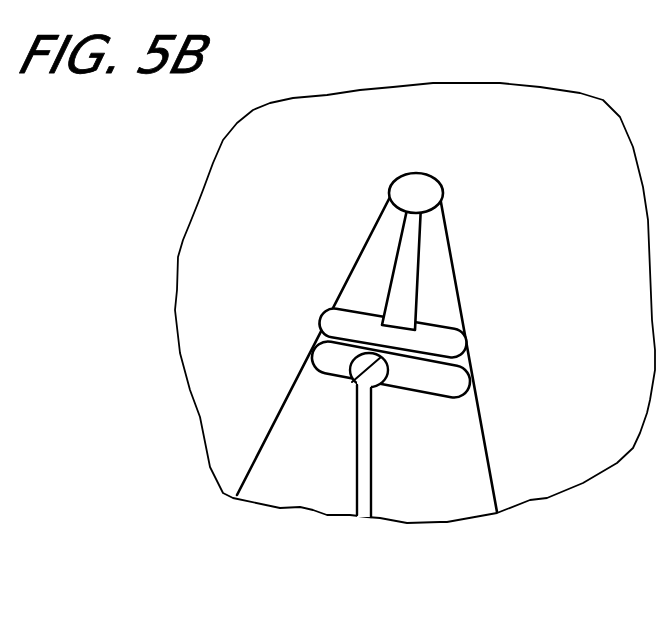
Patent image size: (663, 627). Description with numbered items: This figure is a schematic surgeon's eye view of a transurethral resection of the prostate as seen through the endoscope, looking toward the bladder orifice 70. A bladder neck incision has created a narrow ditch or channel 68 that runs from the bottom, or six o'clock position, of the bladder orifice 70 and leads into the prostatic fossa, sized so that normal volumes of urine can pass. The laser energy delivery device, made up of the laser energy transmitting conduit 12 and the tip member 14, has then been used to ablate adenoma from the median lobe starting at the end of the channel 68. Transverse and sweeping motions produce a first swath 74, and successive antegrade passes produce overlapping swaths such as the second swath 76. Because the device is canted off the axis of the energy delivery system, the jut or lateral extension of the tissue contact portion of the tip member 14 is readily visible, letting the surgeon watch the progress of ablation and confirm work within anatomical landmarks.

The laser energy transmitting conduit 12 is at (360, 498).
The tip member 14 is at (358, 366).
The channel 68 is at (410, 234).
The bladder orifice 70 is at (423, 185).
The first swath 74 is at (450, 340).
The second swath 76 is at (453, 375).